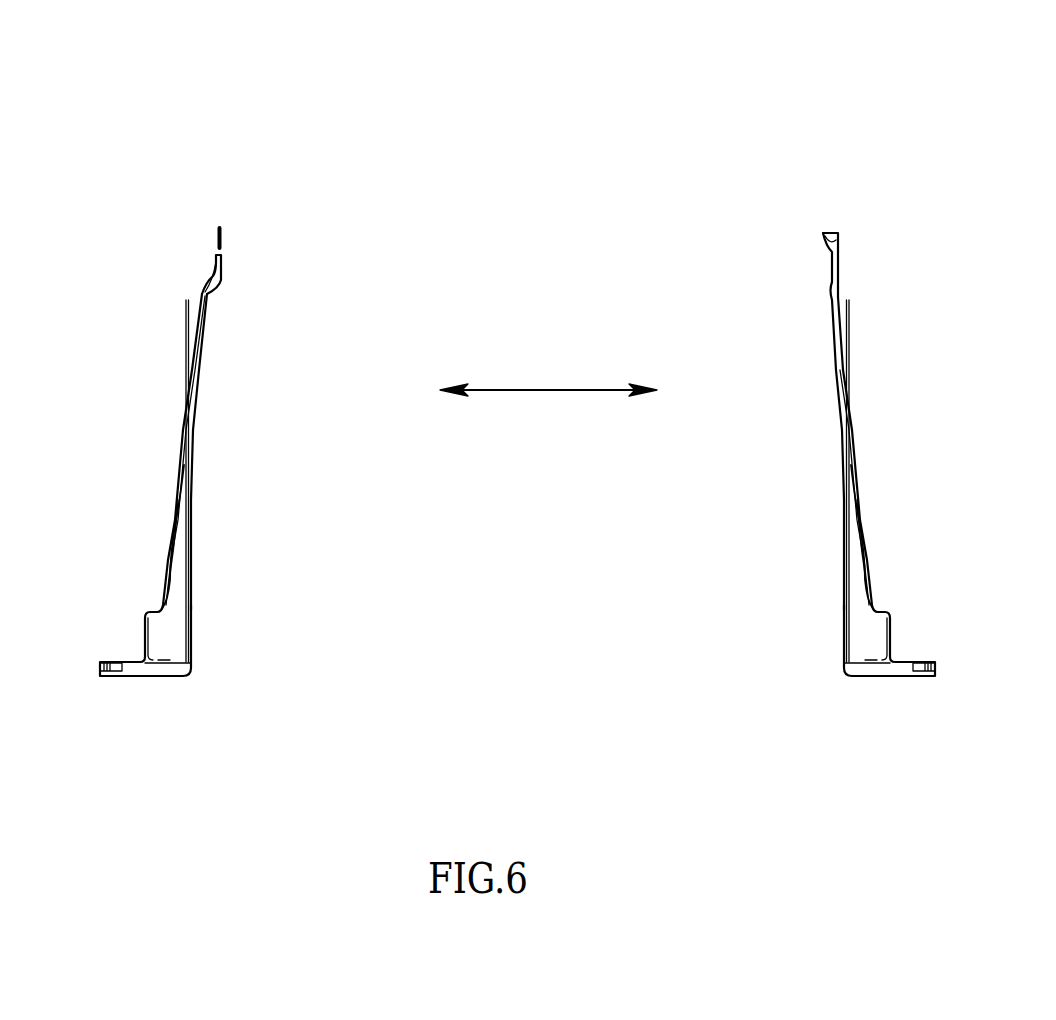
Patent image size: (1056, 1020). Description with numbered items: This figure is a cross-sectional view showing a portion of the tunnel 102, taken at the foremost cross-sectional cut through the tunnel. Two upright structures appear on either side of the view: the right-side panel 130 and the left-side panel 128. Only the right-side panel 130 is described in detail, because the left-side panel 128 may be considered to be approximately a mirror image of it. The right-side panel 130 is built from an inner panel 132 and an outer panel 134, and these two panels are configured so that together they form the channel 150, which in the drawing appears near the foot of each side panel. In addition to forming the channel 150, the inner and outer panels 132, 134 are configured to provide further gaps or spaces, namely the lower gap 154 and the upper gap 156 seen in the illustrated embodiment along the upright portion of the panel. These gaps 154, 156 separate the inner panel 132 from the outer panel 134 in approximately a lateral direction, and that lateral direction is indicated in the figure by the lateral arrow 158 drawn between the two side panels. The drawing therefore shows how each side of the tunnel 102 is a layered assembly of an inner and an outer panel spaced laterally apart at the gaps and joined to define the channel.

The tunnel 102 is at (710, 77).
The left-side panel 128 is at (838, 217).
The right-side panel 130 is at (214, 205).
The inner panel 132 is at (192, 485).
The outer panel 134 is at (174, 493).
The channel 150 is at (167, 638).
The lower gap 154 is at (175, 597).
The upper gap 156 is at (181, 503).
The lateral arrow 158 is at (542, 390).